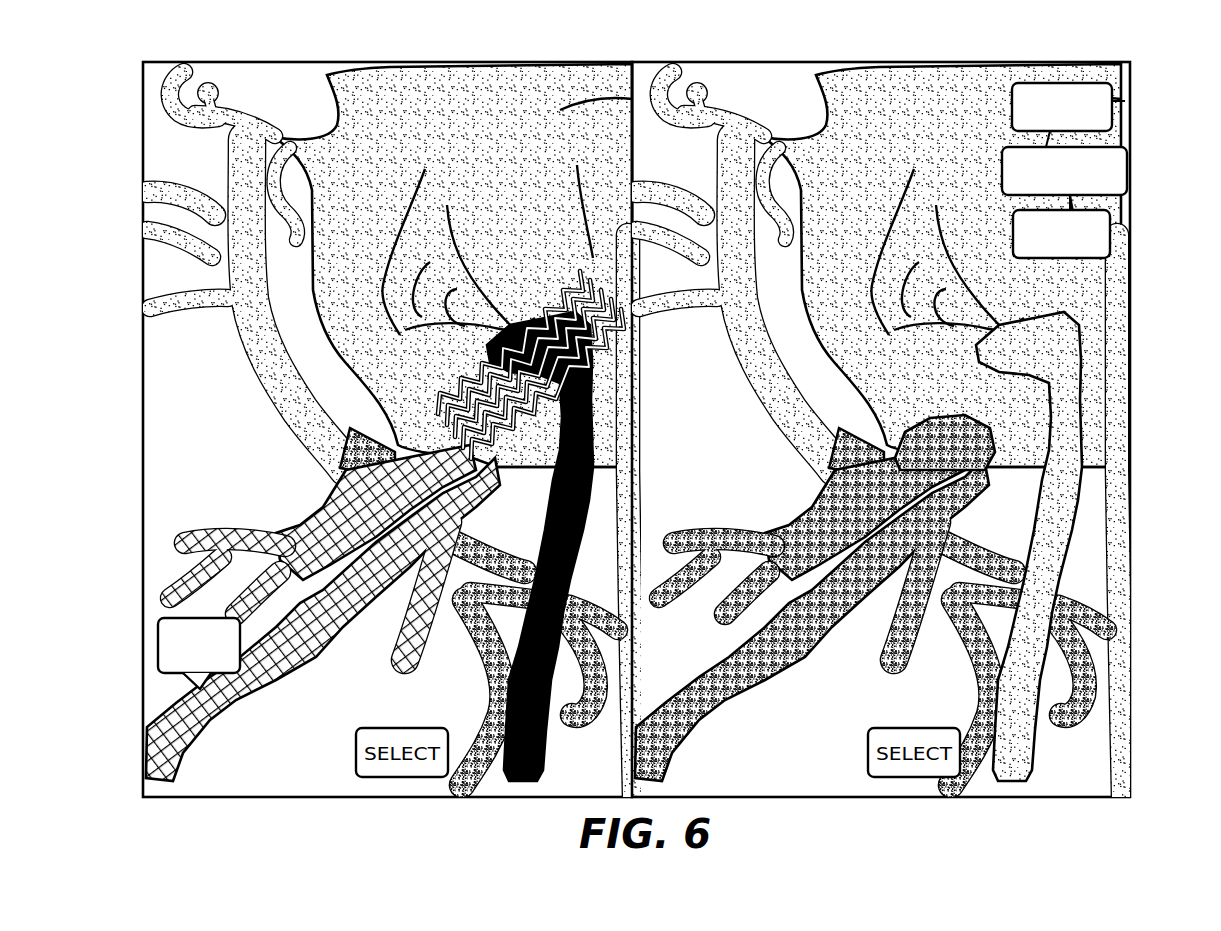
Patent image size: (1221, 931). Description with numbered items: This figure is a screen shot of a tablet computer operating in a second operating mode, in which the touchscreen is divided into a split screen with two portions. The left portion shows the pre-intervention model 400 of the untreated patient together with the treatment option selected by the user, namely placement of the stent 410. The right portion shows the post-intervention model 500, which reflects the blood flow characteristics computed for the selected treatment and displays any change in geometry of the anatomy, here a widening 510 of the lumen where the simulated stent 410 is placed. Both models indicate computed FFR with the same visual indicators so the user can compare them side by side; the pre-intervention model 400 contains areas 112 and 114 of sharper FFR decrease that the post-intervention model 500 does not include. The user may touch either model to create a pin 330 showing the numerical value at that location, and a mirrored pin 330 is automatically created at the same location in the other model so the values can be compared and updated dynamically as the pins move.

The area of sharper decrease in FFR 112 is at (400, 382).
The area of sharper decrease in FFR 114 is at (418, 418).
The stent 410 is at (445, 362).
The pin 330 is at (243, 672).
The pre-intervention model 400 is at (467, 60).
The post-intervention model 500 is at (938, 60).
The widening of the lumen 510 is at (1130, 295).